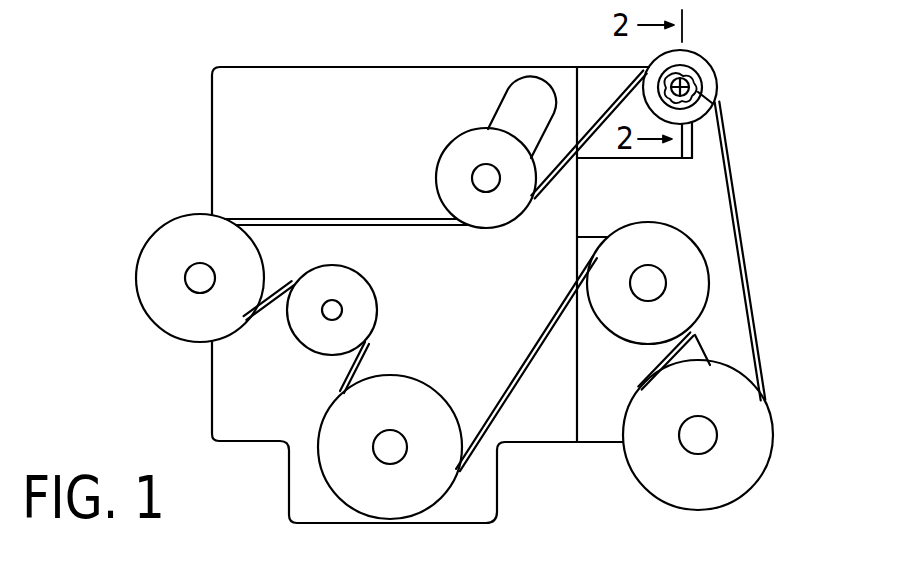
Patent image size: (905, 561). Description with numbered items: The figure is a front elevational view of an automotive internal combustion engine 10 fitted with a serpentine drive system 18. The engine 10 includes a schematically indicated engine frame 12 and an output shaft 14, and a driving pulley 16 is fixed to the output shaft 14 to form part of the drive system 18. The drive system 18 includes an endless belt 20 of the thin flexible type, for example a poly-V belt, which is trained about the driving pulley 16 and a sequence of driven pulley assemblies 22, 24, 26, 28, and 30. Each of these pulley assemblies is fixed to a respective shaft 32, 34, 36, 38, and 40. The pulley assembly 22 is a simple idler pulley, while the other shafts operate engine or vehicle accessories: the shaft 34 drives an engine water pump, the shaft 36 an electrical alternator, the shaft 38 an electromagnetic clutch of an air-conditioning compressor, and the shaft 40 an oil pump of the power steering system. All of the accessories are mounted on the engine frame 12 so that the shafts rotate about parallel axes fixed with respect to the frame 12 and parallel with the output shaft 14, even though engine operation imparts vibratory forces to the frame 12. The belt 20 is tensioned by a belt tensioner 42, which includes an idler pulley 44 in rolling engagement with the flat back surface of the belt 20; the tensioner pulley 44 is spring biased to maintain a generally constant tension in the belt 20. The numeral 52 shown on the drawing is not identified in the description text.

The internal combustion engine 10 is at (182, 401).
The engine frame 12 is at (430, 295).
The output shaft 14 is at (395, 440).
The driving pulley 16 is at (423, 493).
The serpentine drive system 18 is at (760, 254).
The endless belt 20 is at (337, 219).
The driven pulley assembly 22 is at (358, 298).
The driven pulley assembly 24 is at (146, 283).
The driven pulley assembly 26 is at (724, 69).
The driven pulley assembly 28 is at (737, 473).
The driven pulley assembly 30 is at (688, 295).
The shaft 32 is at (345, 312).
The shaft 34 is at (198, 290).
The shaft 36 is at (703, 90).
The shaft 38 is at (705, 433).
The shaft 40 is at (650, 275).
The belt tensioner 42 is at (490, 126).
The idler pulley 44 is at (450, 176).
The bearing 52 is at (710, 100).